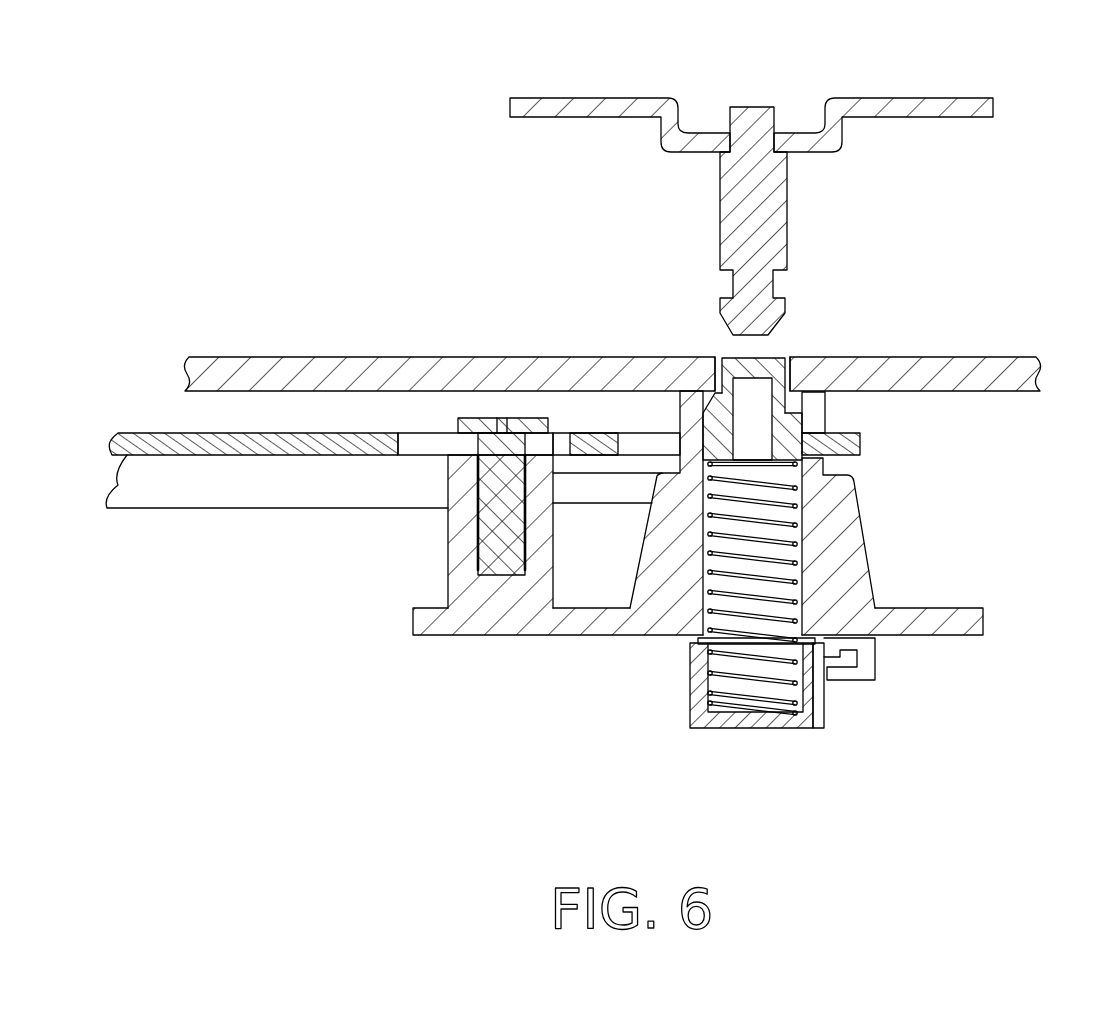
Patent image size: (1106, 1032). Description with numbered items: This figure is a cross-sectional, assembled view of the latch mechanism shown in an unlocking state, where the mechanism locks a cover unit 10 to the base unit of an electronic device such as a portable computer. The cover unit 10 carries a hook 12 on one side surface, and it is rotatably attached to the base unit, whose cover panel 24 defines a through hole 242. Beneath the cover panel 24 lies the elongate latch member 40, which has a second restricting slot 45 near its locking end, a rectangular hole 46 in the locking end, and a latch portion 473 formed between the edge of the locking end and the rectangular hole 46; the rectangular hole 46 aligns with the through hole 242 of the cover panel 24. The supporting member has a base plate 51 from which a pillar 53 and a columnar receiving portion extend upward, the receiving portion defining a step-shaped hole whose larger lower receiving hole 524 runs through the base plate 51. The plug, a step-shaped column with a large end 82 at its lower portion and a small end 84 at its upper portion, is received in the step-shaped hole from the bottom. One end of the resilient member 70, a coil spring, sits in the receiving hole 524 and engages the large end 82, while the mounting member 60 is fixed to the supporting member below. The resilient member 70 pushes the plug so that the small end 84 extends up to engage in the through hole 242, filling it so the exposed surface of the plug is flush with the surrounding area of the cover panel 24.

The cover unit 10 is at (947, 110).
The hook 12 is at (763, 245).
The cover panel 24 is at (953, 372).
The through hole 242 is at (717, 357).
The latch member 40 is at (160, 440).
The second restricting slot 45 is at (410, 447).
The rectangular hole 46 is at (640, 440).
The latch portion 473 is at (860, 440).
The base plate 51 is at (927, 618).
The receiving hole 524 is at (778, 513).
The pillar 53 is at (458, 578).
The mounting member 60 is at (783, 723).
The resilient member 70 is at (715, 572).
The large end 82 is at (722, 422).
The small end 84 is at (767, 357).